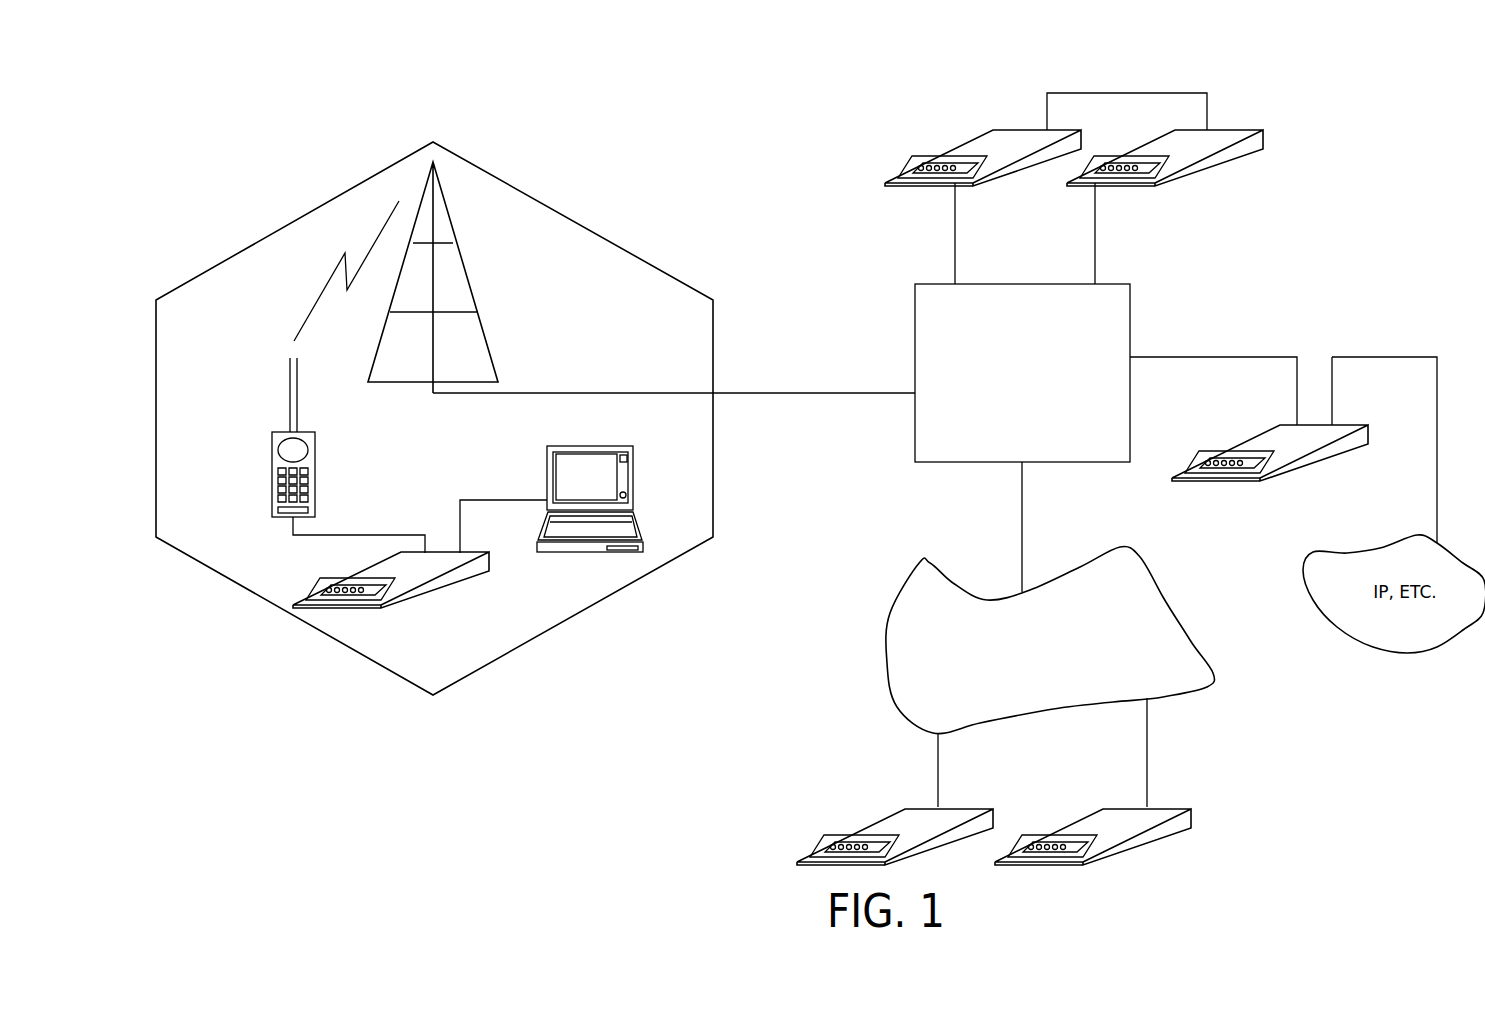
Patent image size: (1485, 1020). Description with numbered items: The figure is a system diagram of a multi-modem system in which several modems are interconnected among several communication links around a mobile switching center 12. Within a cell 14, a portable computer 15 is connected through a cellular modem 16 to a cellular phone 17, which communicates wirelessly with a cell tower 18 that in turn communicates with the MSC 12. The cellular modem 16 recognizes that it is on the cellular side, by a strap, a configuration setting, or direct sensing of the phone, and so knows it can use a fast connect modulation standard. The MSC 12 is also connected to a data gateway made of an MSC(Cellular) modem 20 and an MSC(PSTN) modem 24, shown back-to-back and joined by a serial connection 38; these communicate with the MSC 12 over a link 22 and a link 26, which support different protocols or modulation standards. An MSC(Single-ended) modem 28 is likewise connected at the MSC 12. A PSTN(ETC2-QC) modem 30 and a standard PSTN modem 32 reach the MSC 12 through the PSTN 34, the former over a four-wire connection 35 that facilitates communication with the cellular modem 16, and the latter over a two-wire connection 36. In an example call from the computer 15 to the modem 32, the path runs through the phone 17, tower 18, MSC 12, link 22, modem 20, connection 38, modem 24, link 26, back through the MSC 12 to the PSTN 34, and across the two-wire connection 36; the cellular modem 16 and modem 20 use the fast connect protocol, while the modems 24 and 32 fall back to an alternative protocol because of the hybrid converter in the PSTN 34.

The mobile switching center 12 is at (953, 462).
The cell 14 is at (277, 608).
The portable computer 15 is at (590, 555).
The cellular modem 16 is at (433, 593).
The cellular phone 17 is at (316, 442).
The cell tower 18 is at (483, 323).
The MSC(Cellular) modem 20 is at (1035, 128).
The link 22 is at (957, 267).
The MSC(PSTN) modem 24 is at (1235, 128).
The link 26 is at (1097, 267).
The MSC(Single-ended) modem 28 is at (1220, 480).
The PSTN(ETC2-QC) modem 30 is at (1192, 822).
The standard PSTN modem 32 is at (993, 820).
The PSTN 34 is at (887, 667).
The four-wire connection 35 is at (1148, 778).
The two-wire connection 36 is at (940, 778).
The RS-232 connection 38 is at (1117, 92).